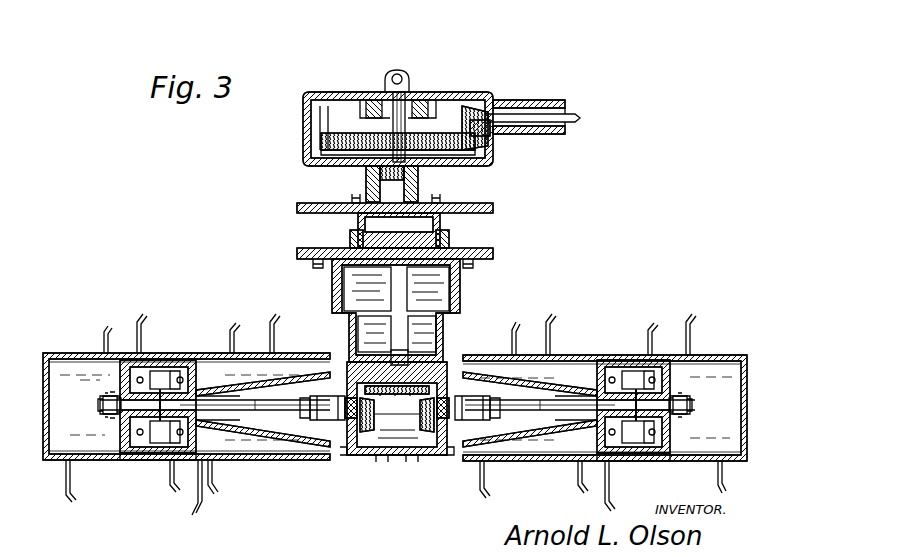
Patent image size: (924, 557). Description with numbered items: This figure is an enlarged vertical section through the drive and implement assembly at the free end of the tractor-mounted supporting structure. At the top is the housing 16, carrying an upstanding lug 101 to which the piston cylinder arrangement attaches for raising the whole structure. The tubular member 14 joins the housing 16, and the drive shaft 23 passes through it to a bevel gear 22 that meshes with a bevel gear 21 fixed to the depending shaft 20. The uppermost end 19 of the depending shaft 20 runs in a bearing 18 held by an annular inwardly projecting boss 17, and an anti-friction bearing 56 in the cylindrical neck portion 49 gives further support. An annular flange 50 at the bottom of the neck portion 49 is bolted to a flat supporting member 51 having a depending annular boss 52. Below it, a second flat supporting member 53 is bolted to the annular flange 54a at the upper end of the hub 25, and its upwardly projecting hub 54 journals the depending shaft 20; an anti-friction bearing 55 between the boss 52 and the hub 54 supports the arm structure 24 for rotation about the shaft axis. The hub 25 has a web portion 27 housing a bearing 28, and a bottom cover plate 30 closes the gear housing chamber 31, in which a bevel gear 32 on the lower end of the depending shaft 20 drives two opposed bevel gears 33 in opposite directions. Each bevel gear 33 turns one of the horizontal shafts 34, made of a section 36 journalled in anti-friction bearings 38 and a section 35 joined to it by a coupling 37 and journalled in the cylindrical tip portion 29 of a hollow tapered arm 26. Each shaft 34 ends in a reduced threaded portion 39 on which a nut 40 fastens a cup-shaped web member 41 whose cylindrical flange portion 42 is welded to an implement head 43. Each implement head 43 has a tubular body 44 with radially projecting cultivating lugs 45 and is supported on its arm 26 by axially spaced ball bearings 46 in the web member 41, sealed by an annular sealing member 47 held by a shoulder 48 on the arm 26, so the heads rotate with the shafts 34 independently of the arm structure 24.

The upstanding lug 101 is at (397, 70).
The tubular member 14 is at (550, 104).
The housing 16 is at (460, 95).
The annular inwardly projecting boss 17 is at (420, 100).
The bearing 18 is at (372, 102).
The uppermost end 19 is at (393, 118).
The depending shaft 20 is at (396, 192).
The bevel gear 21 is at (482, 158).
The bevel gear 22 is at (486, 100).
The drive shaft 23 is at (568, 117).
The arm structure 24 is at (475, 313).
The hub 25 is at (340, 295).
The arms 26 is at (258, 388).
The web portion 27 is at (440, 352).
The bearing 28 is at (352, 340).
The cylindrical tip portion 29 is at (160, 372).
The bottom cover plate 30 is at (378, 458).
The gear housing chamber 31 is at (402, 460).
The bevel gear 32 is at (390, 400).
The bevel gears 33 is at (375, 430).
The shafts 34 is at (160, 455).
The section 35 is at (260, 412).
The section 36 is at (322, 422).
The coupling 37 is at (345, 420).
The anti-friction bearings 38 is at (305, 420).
The reduced threaded portion 39 is at (100, 412).
The nut 40 is at (100, 404).
The cup-shaped web member 41 is at (124, 392).
The cylindrical flange portion 42 is at (165, 368).
The implement heads 43 is at (57, 472).
The tubular body 44 is at (218, 388).
The cultivating lugs 45 is at (145, 314).
The ball bearings 46 is at (130, 462).
The annular sealing member 47 is at (198, 462).
The shoulder 48 is at (200, 388).
The neck portion 49 is at (418, 185).
The annular flange 50 is at (440, 199).
The flat supporting member 51 is at (493, 208).
The annular boss 52 is at (440, 230).
The flat supporting member 53 is at (493, 253).
The hub 54 is at (396, 287).
The annular flange 54a is at (300, 281).
The anti-friction bearing 55 is at (350, 238).
The anti-friction bearing 56 is at (385, 172).